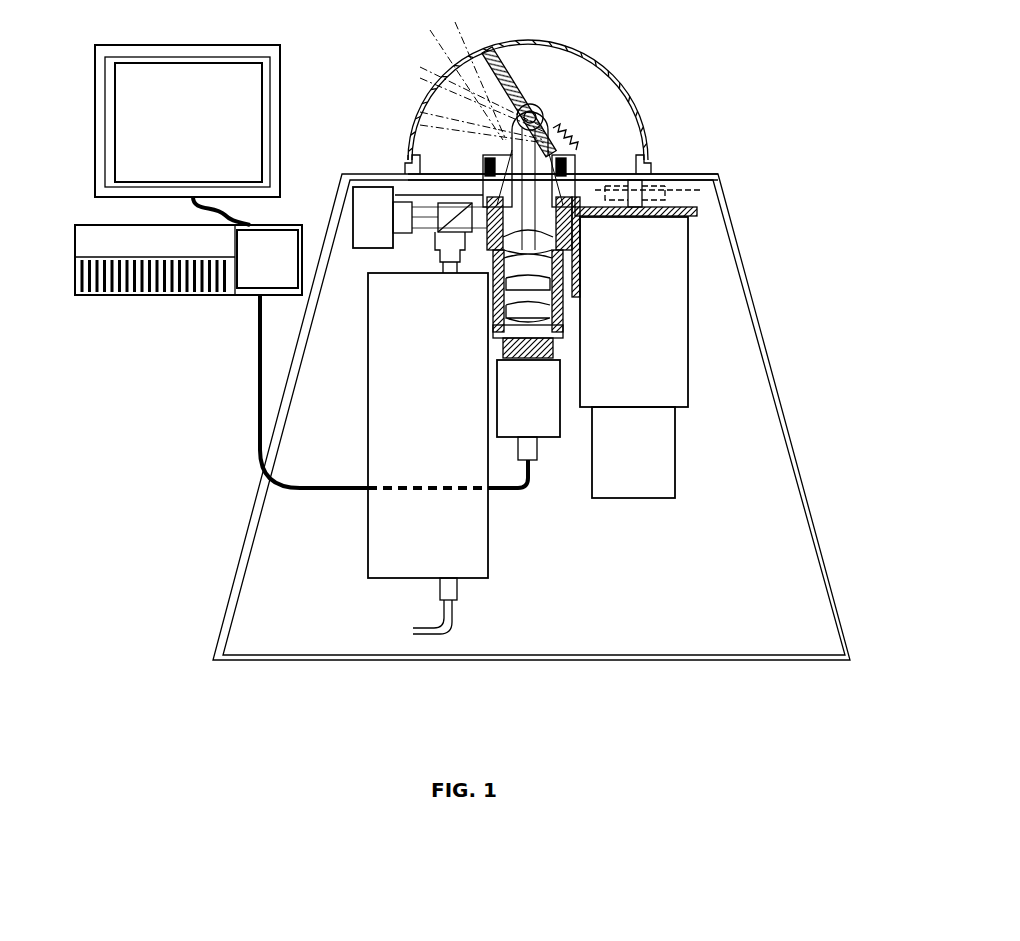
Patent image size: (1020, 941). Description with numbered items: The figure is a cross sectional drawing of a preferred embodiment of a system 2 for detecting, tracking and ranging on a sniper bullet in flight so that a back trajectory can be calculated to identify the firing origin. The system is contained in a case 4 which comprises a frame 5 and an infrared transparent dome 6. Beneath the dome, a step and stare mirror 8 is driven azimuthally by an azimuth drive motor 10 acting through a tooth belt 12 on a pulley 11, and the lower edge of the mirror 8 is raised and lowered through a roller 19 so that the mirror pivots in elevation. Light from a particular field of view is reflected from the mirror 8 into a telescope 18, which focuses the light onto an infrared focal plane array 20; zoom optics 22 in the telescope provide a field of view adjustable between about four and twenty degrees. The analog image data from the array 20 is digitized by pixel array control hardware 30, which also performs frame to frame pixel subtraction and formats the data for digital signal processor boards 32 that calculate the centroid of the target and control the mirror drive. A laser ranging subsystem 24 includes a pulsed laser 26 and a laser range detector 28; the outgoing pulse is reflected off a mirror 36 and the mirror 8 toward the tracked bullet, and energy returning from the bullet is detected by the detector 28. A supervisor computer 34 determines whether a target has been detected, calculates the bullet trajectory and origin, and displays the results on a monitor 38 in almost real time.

The system 2 is at (790, 40).
The case 4 is at (378, 48).
The frame 5 is at (785, 415).
The infrared transparent dome 6 is at (637, 102).
The step and stare mirror 8 is at (508, 70).
The azimuth drive motor 10 is at (634, 357).
The pulley 11 is at (573, 185).
The tooth belt 12 is at (620, 218).
The telescope 18 is at (573, 355).
The roller 19 is at (573, 150).
The infrared focal plane array 20 is at (522, 362).
The zoom optics 22 is at (578, 289).
The laser ranging subsystem 24 is at (313, 415).
The pulsed laser 26 is at (428, 453).
The laser range detector 28 is at (367, 197).
The pixel array control hardware 30 is at (543, 430).
The digital signal processor boards 32 is at (253, 288).
The supervisor computer 34 is at (100, 232).
The mirror 36 is at (443, 205).
The monitor 38 is at (248, 80).